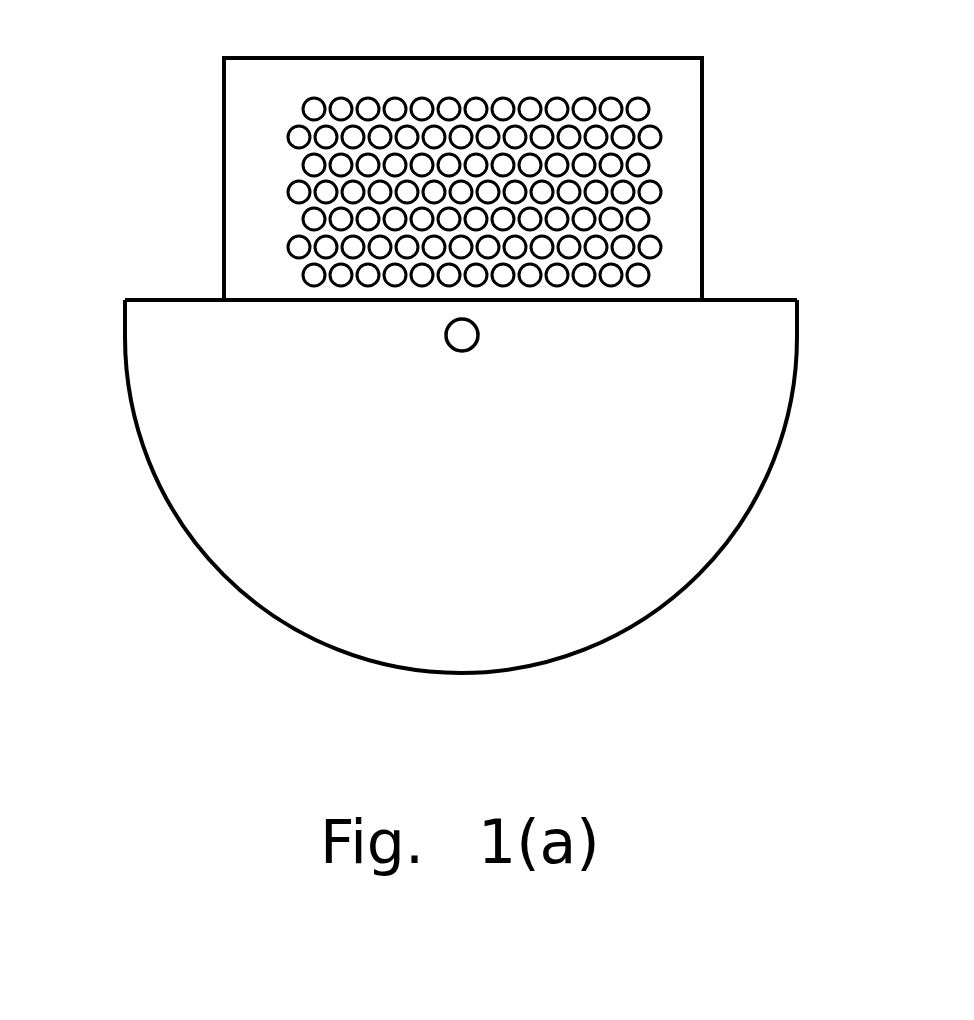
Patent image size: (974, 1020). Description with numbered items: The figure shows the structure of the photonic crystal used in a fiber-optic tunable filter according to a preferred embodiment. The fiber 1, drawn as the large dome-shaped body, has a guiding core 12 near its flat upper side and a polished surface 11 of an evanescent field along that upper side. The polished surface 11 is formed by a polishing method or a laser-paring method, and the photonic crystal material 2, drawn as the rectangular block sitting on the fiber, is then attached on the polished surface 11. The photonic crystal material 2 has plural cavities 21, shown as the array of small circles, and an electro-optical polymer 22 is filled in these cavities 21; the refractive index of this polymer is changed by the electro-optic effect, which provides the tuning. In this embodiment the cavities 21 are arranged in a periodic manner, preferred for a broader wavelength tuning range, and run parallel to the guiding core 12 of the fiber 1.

The fiber 1 is at (768, 477).
The polished surface 11 is at (735, 300).
The guiding core 12 is at (478, 347).
The photonic crystal 2 is at (702, 102).
The plural cavities 21 is at (661, 196).
The EO polymer 22 is at (659, 187).